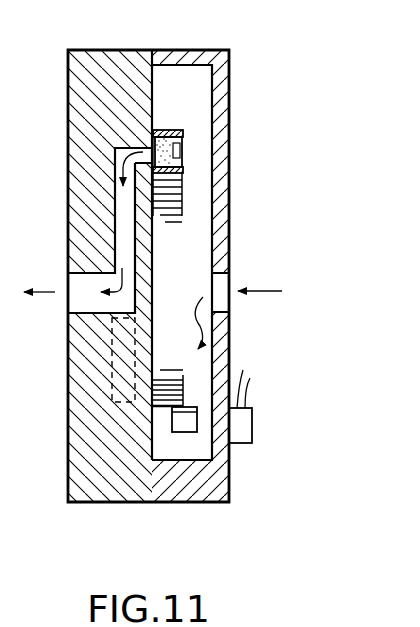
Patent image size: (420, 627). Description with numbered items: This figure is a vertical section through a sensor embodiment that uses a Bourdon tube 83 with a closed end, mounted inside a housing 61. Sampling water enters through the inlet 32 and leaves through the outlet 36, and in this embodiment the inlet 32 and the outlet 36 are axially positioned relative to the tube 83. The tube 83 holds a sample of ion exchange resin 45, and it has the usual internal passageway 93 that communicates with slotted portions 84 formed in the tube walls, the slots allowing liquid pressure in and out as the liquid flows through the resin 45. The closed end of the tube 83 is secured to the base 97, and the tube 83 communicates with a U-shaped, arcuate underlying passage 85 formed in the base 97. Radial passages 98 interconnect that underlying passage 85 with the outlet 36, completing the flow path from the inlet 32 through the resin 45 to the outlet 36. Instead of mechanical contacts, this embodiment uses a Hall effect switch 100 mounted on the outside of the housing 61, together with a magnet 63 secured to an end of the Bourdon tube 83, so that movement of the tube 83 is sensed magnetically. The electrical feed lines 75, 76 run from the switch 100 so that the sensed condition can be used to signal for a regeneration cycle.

The inlet 32 is at (233, 281).
The outlet 36 is at (81, 310).
The ion exchange resin 45 is at (183, 152).
The housing 61 is at (228, 200).
The magnet 63 is at (184, 422).
The electrical feed line 75 is at (243, 370).
The electrical feed line 76 is at (250, 378).
The Bourdon tube 83 is at (181, 131).
The slotted portions 84 is at (183, 148).
The underlying passage 85 is at (130, 149).
The internal passageway 93 is at (168, 176).
The base 97 is at (86, 114).
The radial passages 98 is at (123, 208).
The Hall effect switch 100 is at (238, 428).